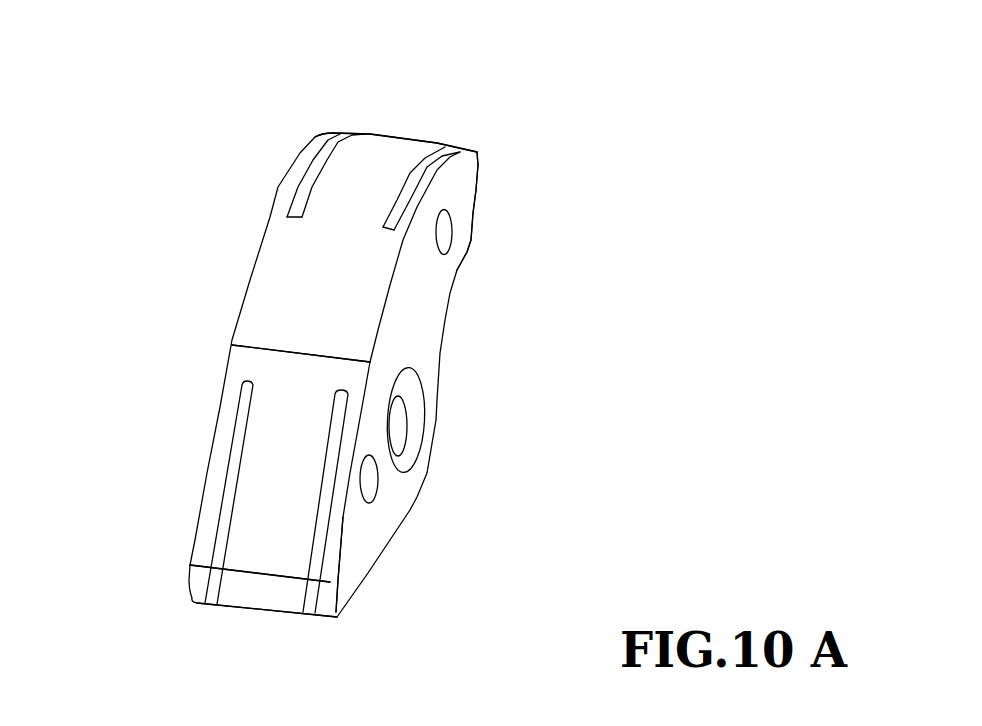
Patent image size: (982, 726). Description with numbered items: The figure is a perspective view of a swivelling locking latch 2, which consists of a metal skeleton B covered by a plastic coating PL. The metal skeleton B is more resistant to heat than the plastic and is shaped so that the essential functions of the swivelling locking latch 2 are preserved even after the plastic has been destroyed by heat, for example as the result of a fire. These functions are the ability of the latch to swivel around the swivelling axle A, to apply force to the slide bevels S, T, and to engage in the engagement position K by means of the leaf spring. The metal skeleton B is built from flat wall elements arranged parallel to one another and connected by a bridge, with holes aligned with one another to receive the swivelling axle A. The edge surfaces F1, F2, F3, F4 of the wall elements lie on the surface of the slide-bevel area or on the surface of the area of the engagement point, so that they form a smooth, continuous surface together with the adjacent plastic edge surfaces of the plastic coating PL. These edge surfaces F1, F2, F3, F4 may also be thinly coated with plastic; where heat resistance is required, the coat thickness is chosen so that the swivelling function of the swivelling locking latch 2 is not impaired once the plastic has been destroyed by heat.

The swivelling locking latch 2 is at (447, 337).
The plastic coating PL is at (367, 154).
The engagement position K is at (477, 207).
The edge surface F1 is at (413, 177).
The edge surface F2 is at (320, 157).
The edge surface F3 is at (377, 557).
The edge surface F4 is at (213, 503).
The swivelling axle A is at (450, 438).
The slide bevel T is at (253, 483).
The slide bevel S is at (315, 542).
The metal skeleton B is at (303, 617).